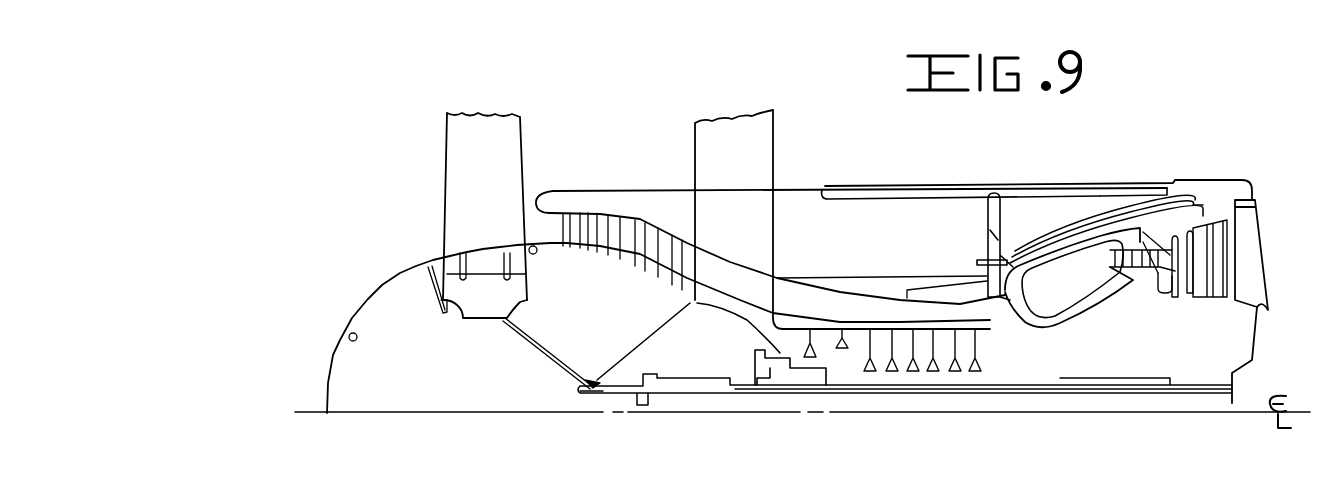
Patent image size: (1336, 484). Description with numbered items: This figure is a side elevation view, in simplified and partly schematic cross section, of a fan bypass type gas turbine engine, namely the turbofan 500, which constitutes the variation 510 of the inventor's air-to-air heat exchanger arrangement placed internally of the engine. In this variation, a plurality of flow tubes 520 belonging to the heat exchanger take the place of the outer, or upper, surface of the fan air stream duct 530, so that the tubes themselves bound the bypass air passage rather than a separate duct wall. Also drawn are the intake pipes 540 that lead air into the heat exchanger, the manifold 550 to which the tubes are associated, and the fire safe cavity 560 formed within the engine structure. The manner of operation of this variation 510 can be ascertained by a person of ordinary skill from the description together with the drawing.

The turbofan 500 is at (1205, 172).
The variation 510 is at (970, 212).
The flow tubes 520 is at (1160, 181).
The fan air stream duct 530 is at (1062, 210).
The intake pipes 540 is at (1003, 203).
The manifold 550 is at (999, 305).
The fire safe cavity 560 is at (800, 220).